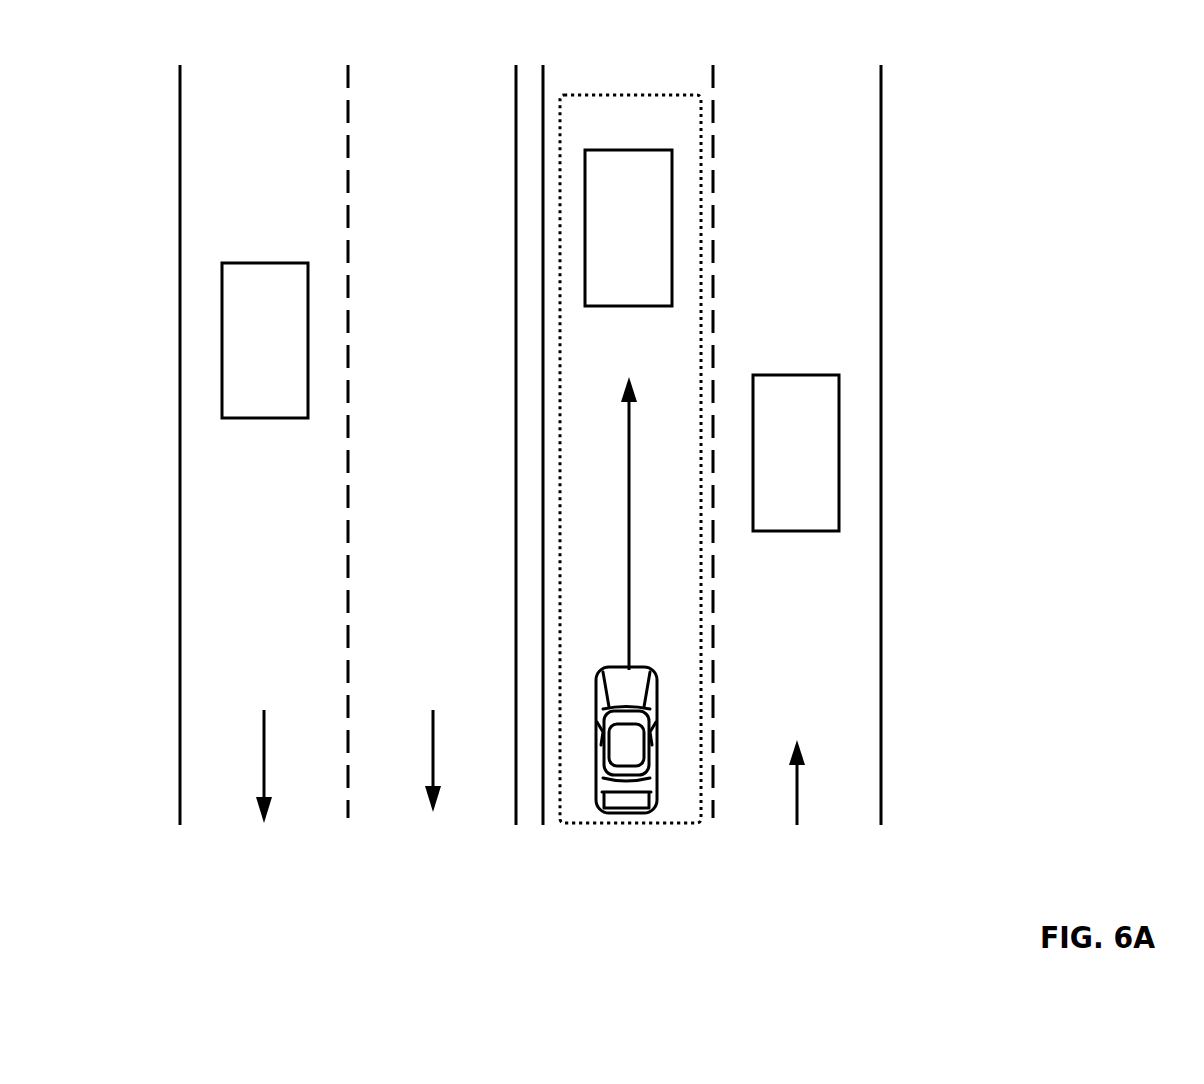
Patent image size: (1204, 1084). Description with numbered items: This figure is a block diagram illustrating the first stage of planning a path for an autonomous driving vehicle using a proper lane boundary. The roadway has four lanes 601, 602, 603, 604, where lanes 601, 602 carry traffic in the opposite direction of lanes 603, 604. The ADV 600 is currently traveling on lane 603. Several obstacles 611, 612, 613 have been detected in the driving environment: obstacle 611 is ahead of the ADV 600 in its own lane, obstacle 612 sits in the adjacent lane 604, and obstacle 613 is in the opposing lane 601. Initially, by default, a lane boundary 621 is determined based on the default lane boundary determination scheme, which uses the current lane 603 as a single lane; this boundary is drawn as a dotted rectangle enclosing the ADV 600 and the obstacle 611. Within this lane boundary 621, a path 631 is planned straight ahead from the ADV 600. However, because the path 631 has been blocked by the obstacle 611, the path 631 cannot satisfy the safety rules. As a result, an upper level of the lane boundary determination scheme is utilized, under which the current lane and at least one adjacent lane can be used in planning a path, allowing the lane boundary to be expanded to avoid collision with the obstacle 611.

The ADV 600 is at (658, 684).
The lane 601 is at (264, 797).
The lane 602 is at (430, 797).
The lane 603 is at (627, 873).
The lane 604 is at (797, 812).
The obstacle 611 is at (628, 228).
The obstacle 612 is at (796, 453).
The obstacle 613 is at (265, 340).
The lane boundary 621 is at (627, 95).
The path 631 is at (629, 600).